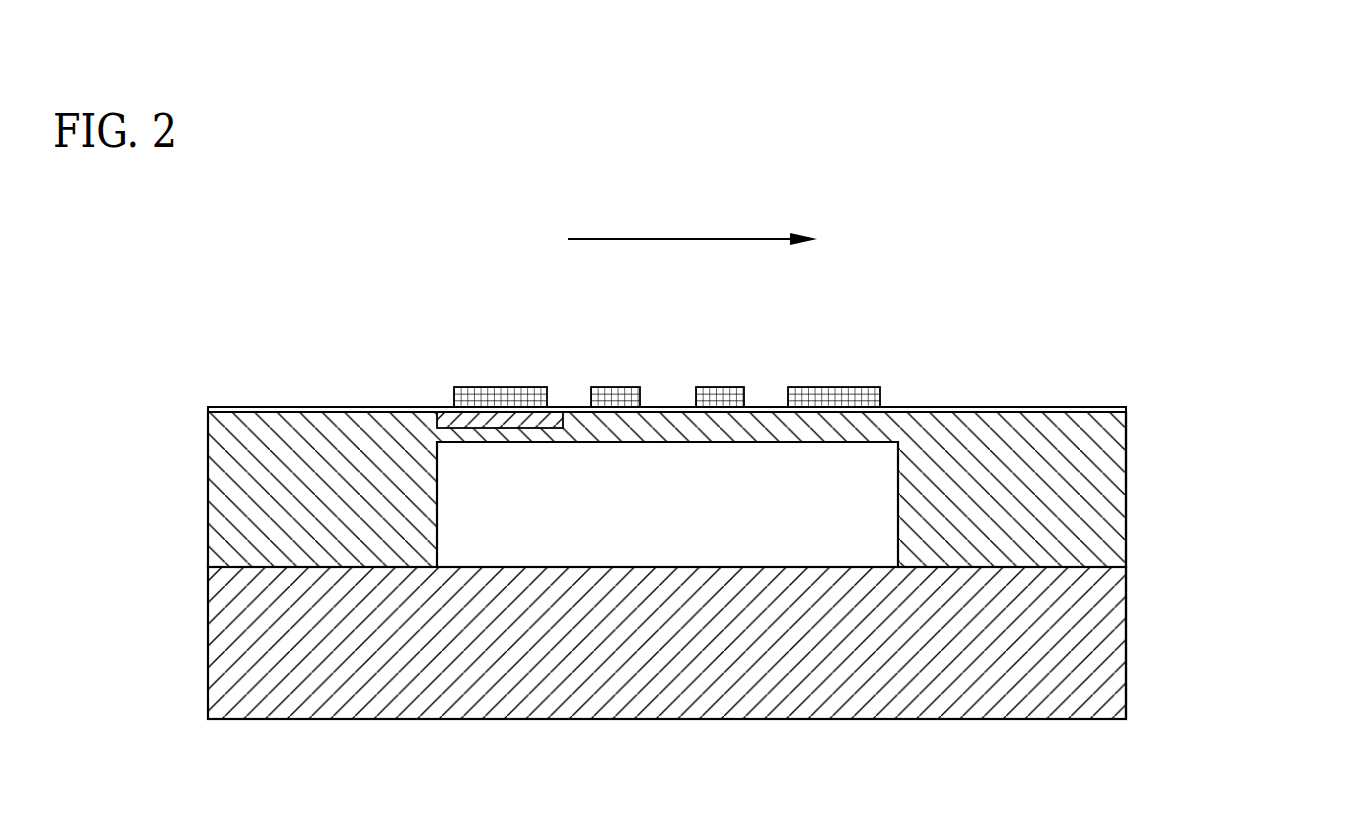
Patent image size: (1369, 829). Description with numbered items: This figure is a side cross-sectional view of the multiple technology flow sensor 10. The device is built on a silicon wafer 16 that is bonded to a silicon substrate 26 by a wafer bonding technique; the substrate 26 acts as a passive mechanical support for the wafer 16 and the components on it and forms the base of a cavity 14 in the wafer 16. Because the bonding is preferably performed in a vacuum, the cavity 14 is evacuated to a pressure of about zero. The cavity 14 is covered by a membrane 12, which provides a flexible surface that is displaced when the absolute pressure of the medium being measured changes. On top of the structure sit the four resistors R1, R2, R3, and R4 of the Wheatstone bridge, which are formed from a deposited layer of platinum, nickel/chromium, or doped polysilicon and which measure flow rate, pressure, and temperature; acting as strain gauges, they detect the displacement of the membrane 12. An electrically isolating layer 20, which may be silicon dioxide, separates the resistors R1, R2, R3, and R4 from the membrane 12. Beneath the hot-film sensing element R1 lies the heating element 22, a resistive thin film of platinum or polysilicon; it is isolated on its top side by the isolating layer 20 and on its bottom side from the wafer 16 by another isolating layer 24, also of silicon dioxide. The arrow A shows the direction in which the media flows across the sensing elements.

The flow sensor 10 is at (786, 457).
The membrane 12 is at (955, 452).
The cavity 14 is at (810, 568).
The wafer 16 is at (1127, 512).
The electrically isolating layer 20 is at (1050, 407).
The heating element 22 is at (437, 425).
The isolating layer 24 is at (437, 420).
The substrate 26 is at (1127, 630).
The resistor R1 is at (473, 387).
The resistor R2 is at (611, 387).
The resistor R3 is at (723, 387).
The resistor R4 is at (832, 387).
The arrow A is at (673, 239).